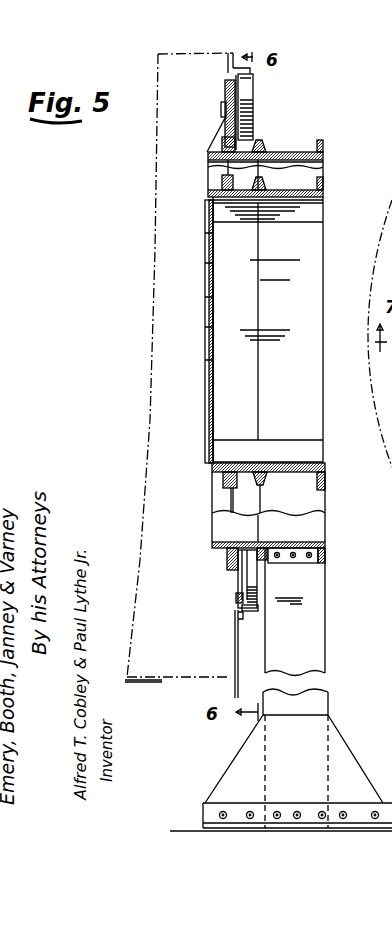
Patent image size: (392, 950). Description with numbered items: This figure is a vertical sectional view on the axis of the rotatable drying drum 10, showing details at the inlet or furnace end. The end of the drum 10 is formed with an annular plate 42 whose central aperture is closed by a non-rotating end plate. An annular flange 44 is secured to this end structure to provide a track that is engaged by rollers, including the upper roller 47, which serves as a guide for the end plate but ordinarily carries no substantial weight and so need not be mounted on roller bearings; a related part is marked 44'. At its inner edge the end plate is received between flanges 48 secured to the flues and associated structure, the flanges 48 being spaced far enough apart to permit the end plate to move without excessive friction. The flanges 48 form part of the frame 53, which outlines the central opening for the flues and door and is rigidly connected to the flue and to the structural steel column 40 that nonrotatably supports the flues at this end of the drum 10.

The rotatable drying drum 10 is at (162, 681).
The structural steel column 40 is at (319, 632).
The annular plate 42 is at (233, 645).
The annular flange 44 is at (214, 587).
The bushing collar 44' is at (304, 607).
The upper roller 47 is at (247, 100).
The flange 48 is at (230, 558).
The frame 53 is at (228, 203).